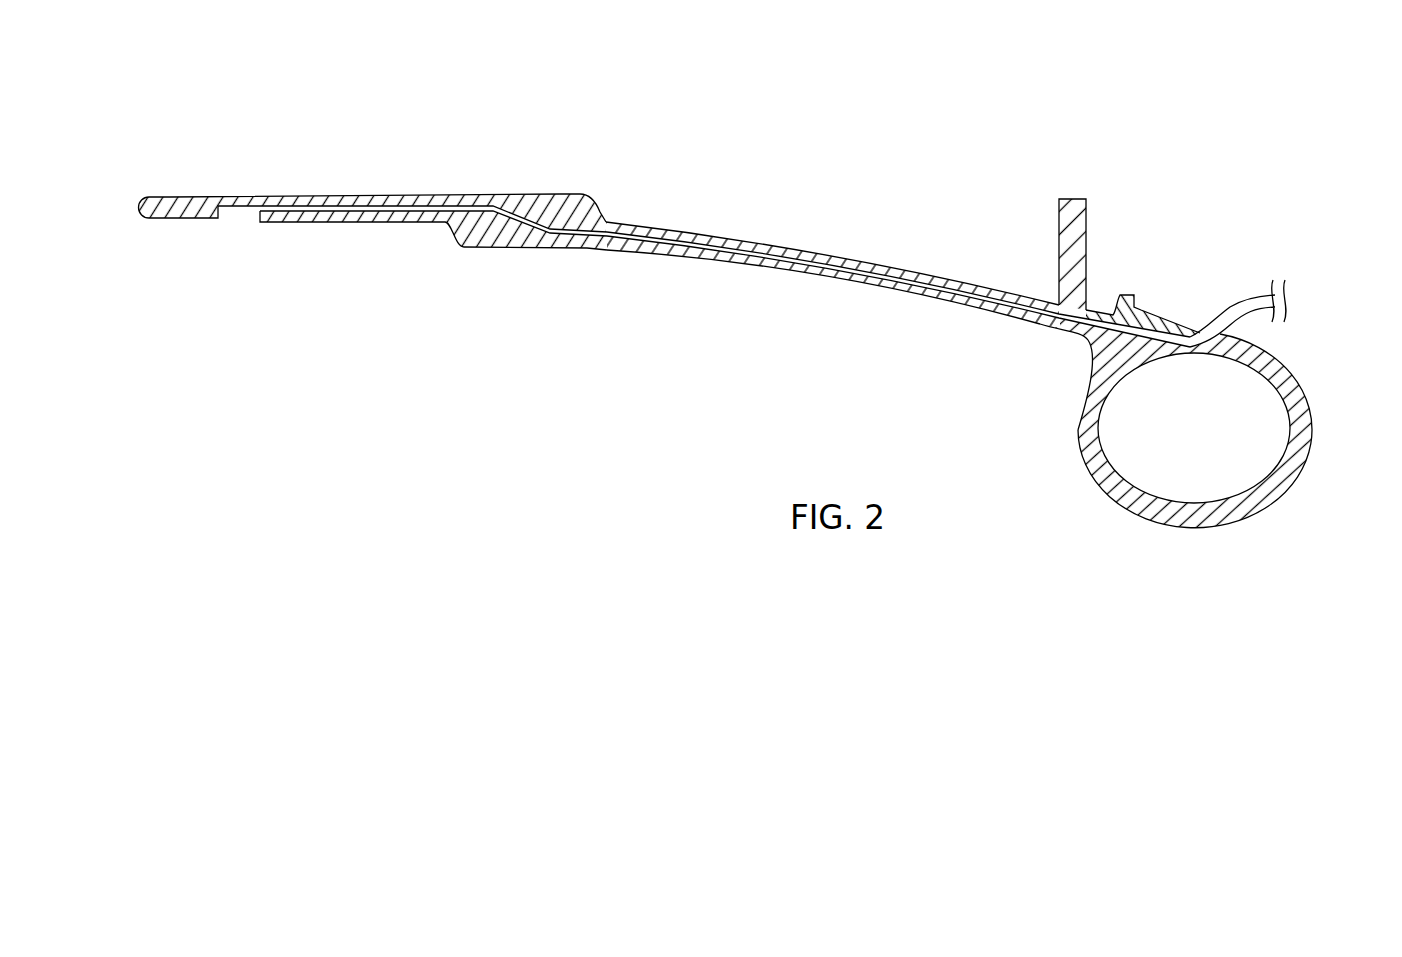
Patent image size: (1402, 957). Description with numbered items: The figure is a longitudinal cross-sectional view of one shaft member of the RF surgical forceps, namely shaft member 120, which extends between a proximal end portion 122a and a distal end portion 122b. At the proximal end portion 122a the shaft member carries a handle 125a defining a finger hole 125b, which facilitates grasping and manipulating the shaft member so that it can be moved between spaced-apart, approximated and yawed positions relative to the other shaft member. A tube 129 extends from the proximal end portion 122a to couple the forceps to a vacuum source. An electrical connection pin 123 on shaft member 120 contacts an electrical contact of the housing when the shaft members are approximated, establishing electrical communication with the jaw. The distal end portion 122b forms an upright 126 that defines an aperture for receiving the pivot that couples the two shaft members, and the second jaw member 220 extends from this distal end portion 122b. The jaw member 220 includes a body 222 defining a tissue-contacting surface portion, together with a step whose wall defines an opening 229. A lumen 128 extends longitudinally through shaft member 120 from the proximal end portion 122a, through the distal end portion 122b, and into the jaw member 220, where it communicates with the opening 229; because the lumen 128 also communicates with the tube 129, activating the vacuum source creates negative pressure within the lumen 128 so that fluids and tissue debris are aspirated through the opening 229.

The second shaft member 120 is at (746, 80).
The second jaw member 220 is at (278, 162).
The body 222 is at (167, 197).
The opening 229 is at (230, 215).
The upright 126 is at (537, 193).
The lumen 128 is at (822, 254).
The proximal end portion 122a is at (1083, 325).
The distal end portion 122b is at (590, 253).
The electrical connection pin 123 is at (1073, 208).
The tube 129 is at (1243, 300).
The handle 125a is at (1208, 530).
The finger hole 125b is at (1243, 460).